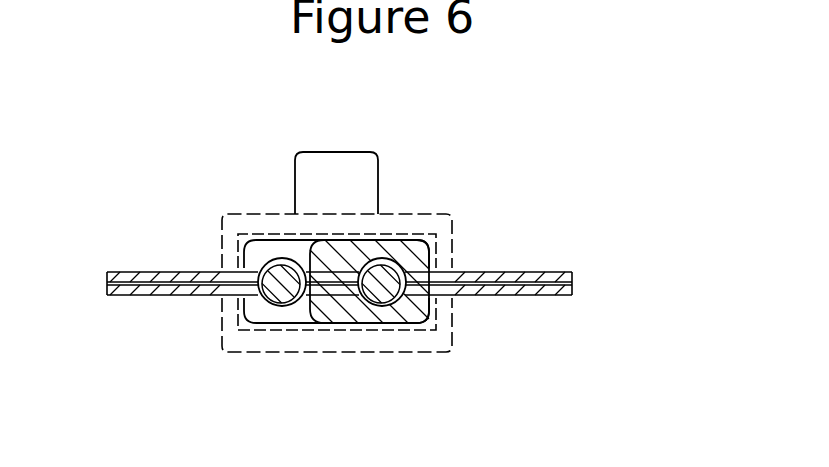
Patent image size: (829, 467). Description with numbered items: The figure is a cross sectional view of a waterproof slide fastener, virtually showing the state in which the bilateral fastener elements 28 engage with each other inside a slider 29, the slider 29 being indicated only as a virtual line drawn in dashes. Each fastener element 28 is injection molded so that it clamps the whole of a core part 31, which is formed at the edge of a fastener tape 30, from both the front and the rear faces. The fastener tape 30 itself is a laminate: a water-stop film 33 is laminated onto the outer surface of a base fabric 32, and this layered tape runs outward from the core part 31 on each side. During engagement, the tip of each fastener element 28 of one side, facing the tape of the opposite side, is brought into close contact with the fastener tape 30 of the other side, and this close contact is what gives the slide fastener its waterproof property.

The fastener element 28 is at (337, 302).
The slider 29 is at (378, 180).
The fastener tape 30 is at (407, 278).
The core part 31 is at (377, 293).
The base fabric 32 is at (575, 290).
The water-stop film 33 is at (575, 278).